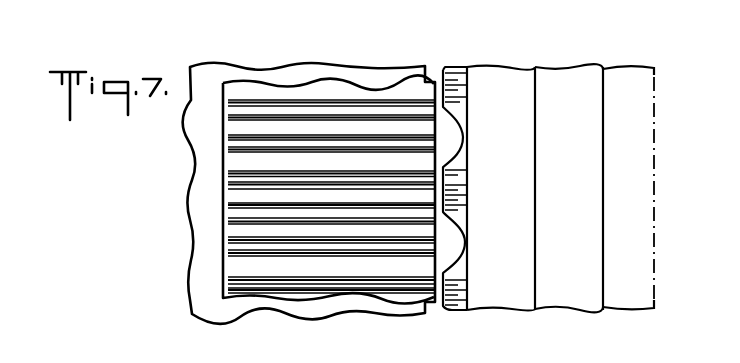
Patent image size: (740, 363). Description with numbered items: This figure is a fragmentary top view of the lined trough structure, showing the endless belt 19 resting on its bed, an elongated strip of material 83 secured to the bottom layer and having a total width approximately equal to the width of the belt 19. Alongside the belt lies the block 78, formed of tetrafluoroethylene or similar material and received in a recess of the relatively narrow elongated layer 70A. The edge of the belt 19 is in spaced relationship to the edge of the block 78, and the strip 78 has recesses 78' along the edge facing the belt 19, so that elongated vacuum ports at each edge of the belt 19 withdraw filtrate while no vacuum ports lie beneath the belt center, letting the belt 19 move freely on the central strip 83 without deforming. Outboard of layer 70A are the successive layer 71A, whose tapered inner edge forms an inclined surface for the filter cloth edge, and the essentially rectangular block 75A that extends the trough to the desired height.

The endless belt 19 is at (230, 175).
The elongated strip of material 83 is at (204, 219).
The block 78 is at (461, 171).
The recesses 78' is at (480, 190).
The layer 70A is at (516, 188).
The layer 71A is at (578, 188).
The block 75A is at (636, 188).